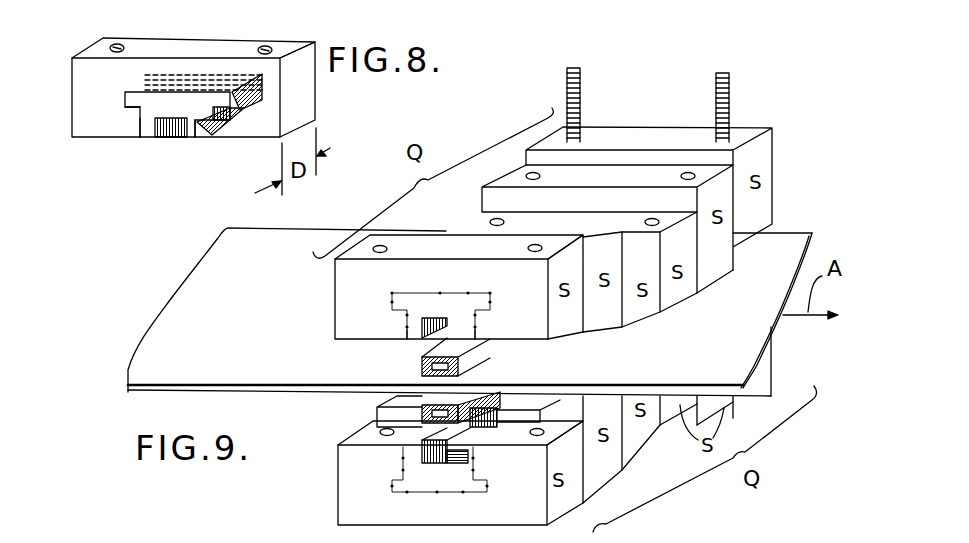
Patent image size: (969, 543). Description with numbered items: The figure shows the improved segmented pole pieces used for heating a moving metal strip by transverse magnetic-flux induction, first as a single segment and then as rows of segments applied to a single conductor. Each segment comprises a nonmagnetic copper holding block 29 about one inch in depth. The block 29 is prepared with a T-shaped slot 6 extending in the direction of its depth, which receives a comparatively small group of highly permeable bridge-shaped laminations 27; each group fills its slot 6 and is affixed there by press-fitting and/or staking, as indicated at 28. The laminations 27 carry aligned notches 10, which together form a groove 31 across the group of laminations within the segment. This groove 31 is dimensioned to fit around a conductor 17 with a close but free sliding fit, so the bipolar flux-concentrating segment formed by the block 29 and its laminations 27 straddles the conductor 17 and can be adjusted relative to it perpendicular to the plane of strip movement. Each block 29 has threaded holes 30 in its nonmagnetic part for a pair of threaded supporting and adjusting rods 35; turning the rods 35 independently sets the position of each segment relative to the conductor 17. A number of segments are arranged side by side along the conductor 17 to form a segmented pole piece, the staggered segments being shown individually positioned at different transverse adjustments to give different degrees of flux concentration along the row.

In FIG. 8, the T-shaped slot 6 is at (138, 108).
In FIG. 8, the aligned notches 10 is at (168, 128).
In FIG. 9, the aligned notches 10 is at (405, 328).
In FIG. 9, the conductor 17 is at (485, 366).
In FIG. 8, the bridge-shaped laminations 27 is at (167, 100).
In FIG. 9, the bridge-shaped laminations 27 is at (406, 300).
In FIG. 8, the staking 28 is at (205, 92).
In FIG. 8, the holding block 29 is at (72, 108).
In FIG. 8, the threaded holes 30 is at (141, 20).
In FIG. 9, the threaded holes 30 is at (646, 221).
In FIG. 8, the groove 31 is at (184, 126).
In FIG. 9, the groove 31 is at (445, 338).
In FIG. 9, the threaded supporting and adjusting rods 35 is at (588, 72).